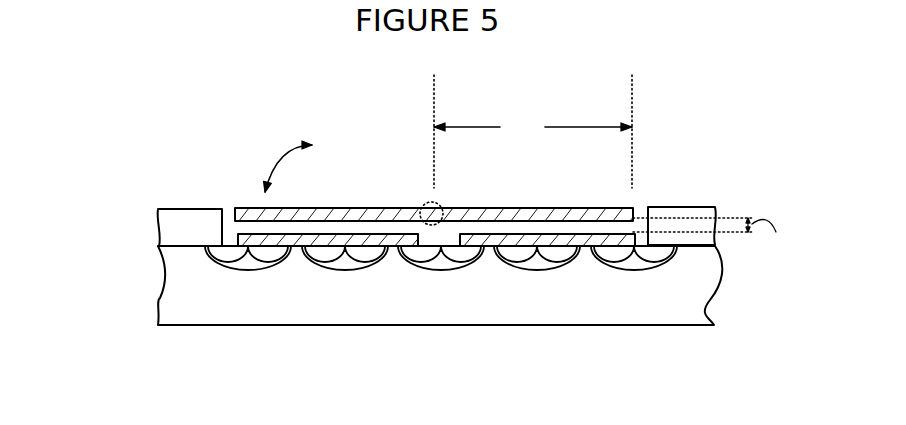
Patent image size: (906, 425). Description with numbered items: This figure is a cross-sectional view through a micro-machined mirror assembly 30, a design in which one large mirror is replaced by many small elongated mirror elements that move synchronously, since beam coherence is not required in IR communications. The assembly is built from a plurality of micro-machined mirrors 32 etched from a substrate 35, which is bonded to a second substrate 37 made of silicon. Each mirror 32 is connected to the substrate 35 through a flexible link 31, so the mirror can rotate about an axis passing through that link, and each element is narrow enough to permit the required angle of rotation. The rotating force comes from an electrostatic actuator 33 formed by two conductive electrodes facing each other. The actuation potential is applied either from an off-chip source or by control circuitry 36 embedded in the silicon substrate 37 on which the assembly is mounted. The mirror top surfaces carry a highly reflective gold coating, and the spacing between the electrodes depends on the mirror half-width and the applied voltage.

The micro-machined mirror assembly 30 is at (108, 158).
The flexible link 31 is at (425, 203).
The micro-machined mirror 32 is at (320, 214).
The electrostatic actuator 33 is at (548, 242).
The substrate 35 is at (162, 227).
The control circuitry 36 is at (349, 268).
The second substrate 37 is at (163, 300).